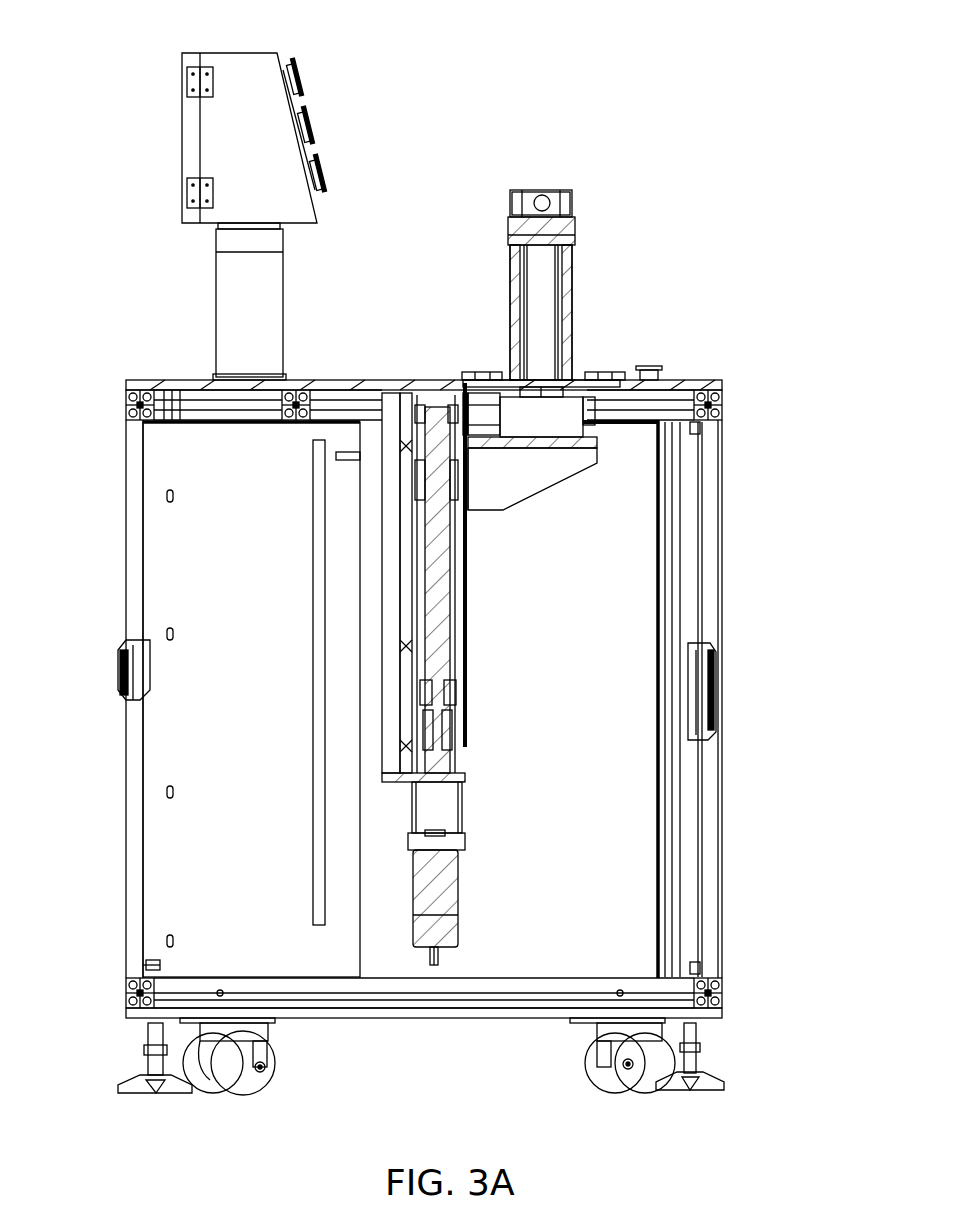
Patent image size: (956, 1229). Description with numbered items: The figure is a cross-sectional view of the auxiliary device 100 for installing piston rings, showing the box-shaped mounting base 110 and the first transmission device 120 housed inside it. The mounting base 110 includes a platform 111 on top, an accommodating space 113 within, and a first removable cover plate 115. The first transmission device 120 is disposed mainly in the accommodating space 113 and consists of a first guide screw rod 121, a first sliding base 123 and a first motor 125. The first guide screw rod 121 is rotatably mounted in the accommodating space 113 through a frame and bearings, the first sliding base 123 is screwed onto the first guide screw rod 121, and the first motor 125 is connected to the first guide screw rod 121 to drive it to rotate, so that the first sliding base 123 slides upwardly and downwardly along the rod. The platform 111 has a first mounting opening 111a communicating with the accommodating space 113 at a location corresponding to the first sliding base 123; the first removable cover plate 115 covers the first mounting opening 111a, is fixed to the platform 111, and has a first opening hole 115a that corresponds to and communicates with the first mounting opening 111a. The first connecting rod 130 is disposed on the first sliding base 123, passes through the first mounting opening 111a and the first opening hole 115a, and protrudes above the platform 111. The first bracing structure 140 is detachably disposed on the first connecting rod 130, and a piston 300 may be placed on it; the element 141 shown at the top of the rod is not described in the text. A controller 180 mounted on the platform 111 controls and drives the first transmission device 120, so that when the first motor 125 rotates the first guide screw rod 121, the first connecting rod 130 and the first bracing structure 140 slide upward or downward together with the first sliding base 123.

The auxiliary device 100 is at (145, 318).
The mounting base 110 is at (710, 500).
The platform 111 is at (675, 383).
The first mounting opening 111a is at (625, 421).
The accommodating space 113 is at (638, 572).
The first removable cover plate 115 is at (578, 385).
The first opening hole 115a is at (570, 388).
The first transmission device 120 is at (482, 752).
The first guide screw rod 121 is at (440, 648).
The first sliding base 123 is at (533, 503).
The first motor 125 is at (448, 880).
The first connecting rod 130 is at (510, 320).
The first bracing structure 140 is at (508, 230).
The head cap 141 is at (515, 190).
The controller 180 is at (650, 365).
The piston 300 is at (565, 190).